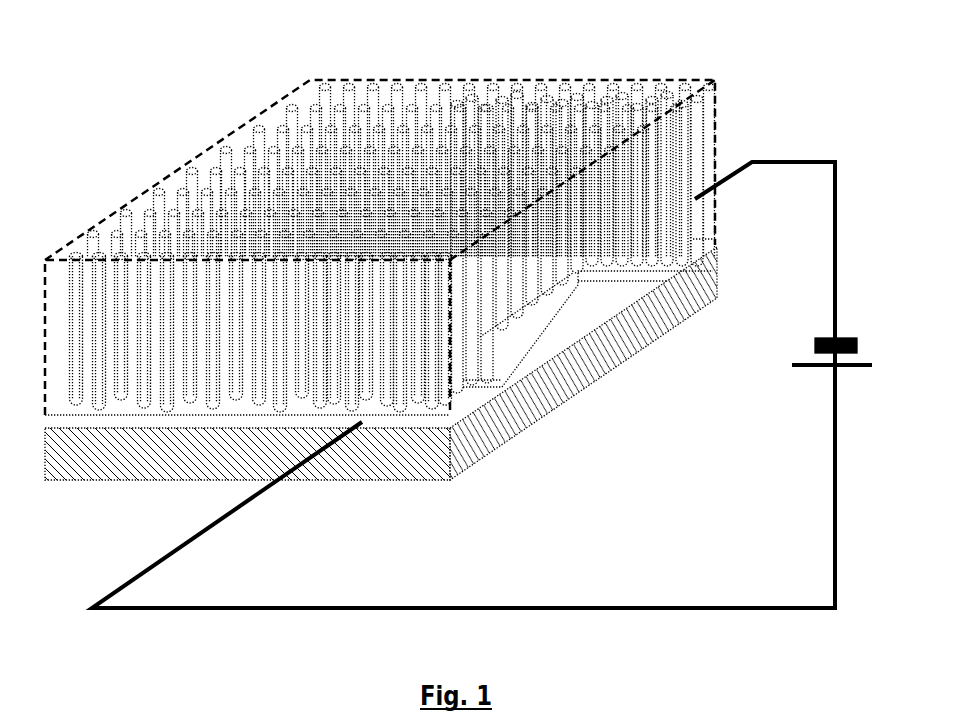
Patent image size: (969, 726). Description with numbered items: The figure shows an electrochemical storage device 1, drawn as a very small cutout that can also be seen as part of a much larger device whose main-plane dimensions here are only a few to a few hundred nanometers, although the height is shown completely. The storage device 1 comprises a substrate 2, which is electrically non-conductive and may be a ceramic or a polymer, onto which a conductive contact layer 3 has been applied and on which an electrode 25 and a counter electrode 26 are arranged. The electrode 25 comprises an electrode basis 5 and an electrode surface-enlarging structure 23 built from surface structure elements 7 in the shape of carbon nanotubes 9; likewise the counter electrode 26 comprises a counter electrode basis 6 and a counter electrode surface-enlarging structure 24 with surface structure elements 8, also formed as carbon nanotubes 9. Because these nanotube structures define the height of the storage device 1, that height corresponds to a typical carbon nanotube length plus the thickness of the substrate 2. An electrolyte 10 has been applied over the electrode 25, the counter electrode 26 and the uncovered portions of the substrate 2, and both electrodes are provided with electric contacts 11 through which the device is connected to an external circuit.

The storage device 1 is at (380, 212).
The substrate 2 is at (155, 462).
The contact layer 3 is at (377, 225).
The electrode basis 5 is at (80, 304).
The counter electrode basis 6 is at (383, 337).
The surface structure elements 7 is at (401, 237).
The surface structure elements 8 is at (582, 204).
The carbon nanotubes 9 is at (401, 237).
The electrolyte 10 is at (138, 215).
The electric contacts 11 is at (733, 170).
The electrode surface-enlarging structure 23 is at (248, 148).
The counter electrode surface-enlarging structure 24 is at (635, 123).
The electrode 25 is at (65, 407).
The counter electrode 26 is at (640, 266).